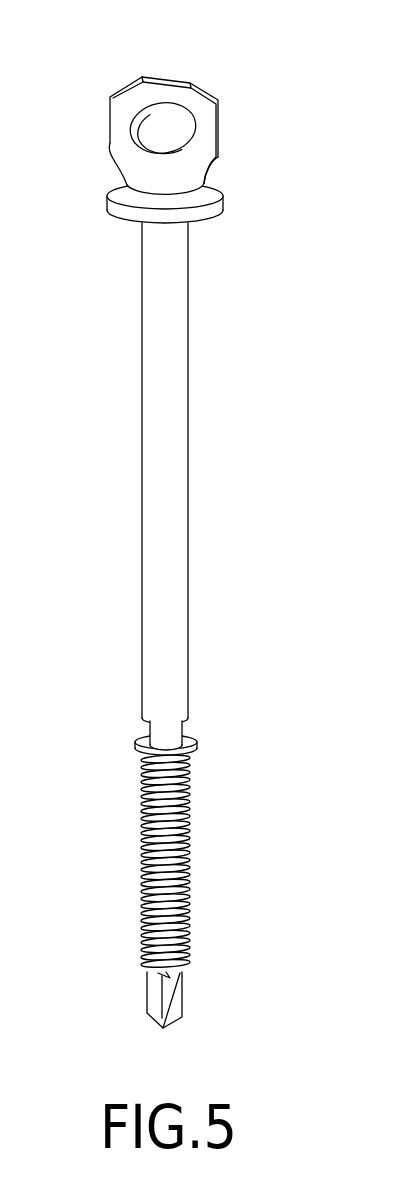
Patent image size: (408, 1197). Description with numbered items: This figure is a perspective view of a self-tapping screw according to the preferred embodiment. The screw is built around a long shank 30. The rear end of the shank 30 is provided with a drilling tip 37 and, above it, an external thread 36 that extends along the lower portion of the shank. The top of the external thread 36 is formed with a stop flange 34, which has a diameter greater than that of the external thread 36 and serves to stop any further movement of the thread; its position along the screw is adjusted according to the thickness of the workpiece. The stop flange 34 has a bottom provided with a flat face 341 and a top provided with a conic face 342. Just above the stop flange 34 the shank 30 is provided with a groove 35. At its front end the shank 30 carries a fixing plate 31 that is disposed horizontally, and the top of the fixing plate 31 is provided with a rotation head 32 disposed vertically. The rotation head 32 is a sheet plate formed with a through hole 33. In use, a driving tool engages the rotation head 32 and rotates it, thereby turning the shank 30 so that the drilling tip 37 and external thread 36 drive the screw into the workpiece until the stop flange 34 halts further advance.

The shank 30 is at (157, 475).
The fixing plate 31 is at (120, 208).
The rotation head 32 is at (168, 88).
The through hole 33 is at (163, 127).
The stop flange 34 is at (169, 755).
The flat face 341 is at (193, 746).
The conic face 342 is at (187, 740).
The groove 35 is at (162, 735).
The external thread 36 is at (142, 888).
The drilling tip 37 is at (162, 1003).